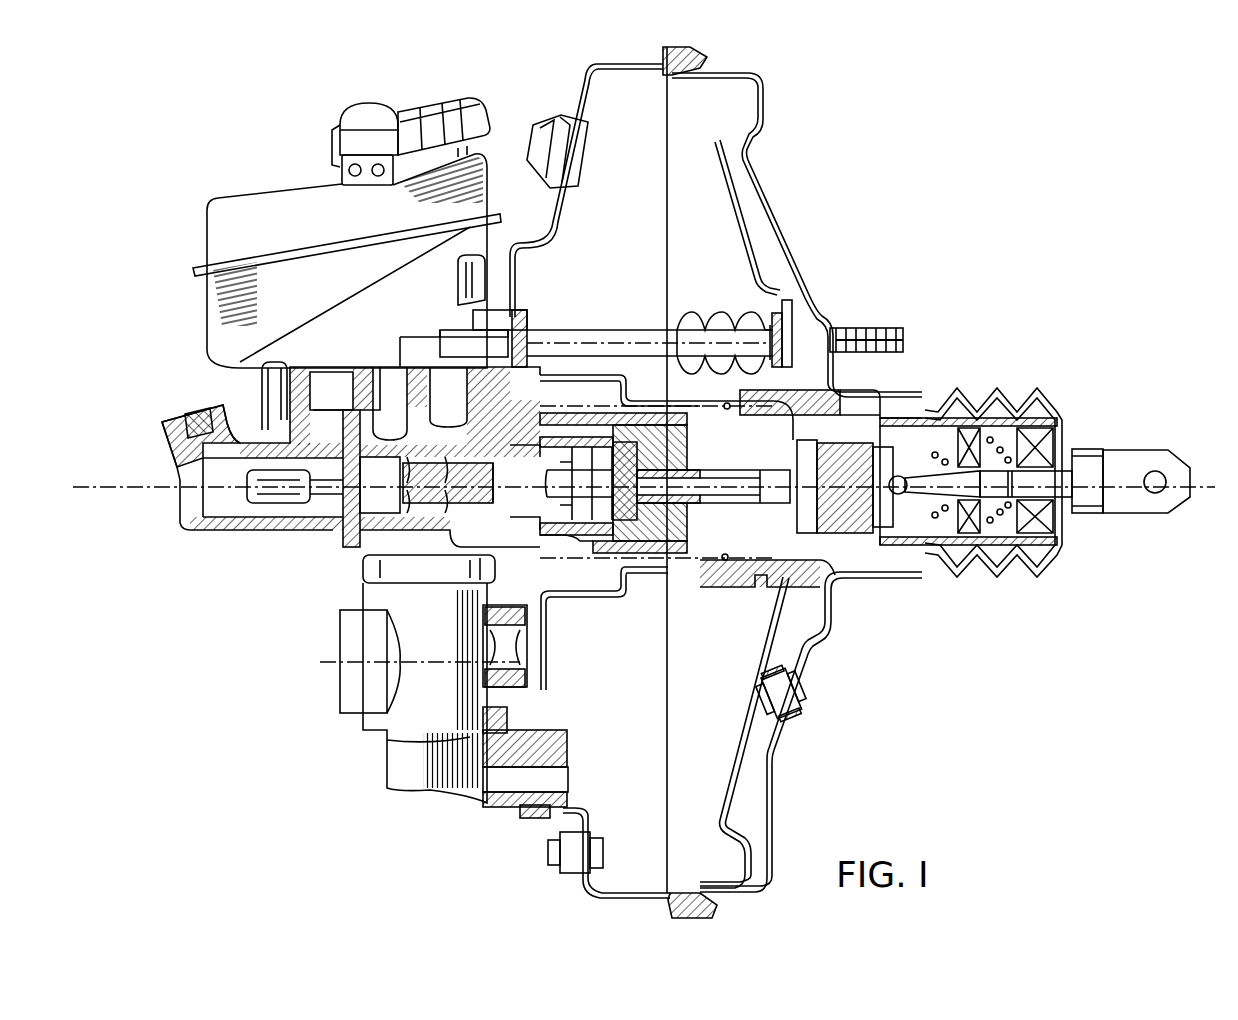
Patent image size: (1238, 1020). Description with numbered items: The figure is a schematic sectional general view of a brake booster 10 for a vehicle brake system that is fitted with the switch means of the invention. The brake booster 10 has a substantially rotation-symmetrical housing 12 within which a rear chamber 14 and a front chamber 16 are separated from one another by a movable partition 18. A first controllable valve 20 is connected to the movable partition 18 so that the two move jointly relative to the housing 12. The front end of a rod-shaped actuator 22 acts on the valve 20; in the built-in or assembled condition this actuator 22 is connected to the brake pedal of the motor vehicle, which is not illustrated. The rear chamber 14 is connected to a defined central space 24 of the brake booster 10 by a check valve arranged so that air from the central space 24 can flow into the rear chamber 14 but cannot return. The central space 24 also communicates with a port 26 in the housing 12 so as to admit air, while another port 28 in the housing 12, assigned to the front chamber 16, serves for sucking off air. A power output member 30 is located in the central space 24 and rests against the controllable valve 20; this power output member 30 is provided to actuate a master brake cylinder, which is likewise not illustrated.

The brake booster 10 is at (848, 97).
The housing 12 is at (601, 66).
The rear chamber 14 is at (753, 223).
The front chamber 16 is at (623, 231).
The movable partition 18 is at (753, 260).
The first controllable valve 20 is at (1003, 383).
The rod-shaped actuator 22 is at (1137, 457).
The central space 24 is at (713, 532).
The port 26 is at (517, 640).
The port 28 is at (530, 137).
The power output member 30 is at (267, 517).